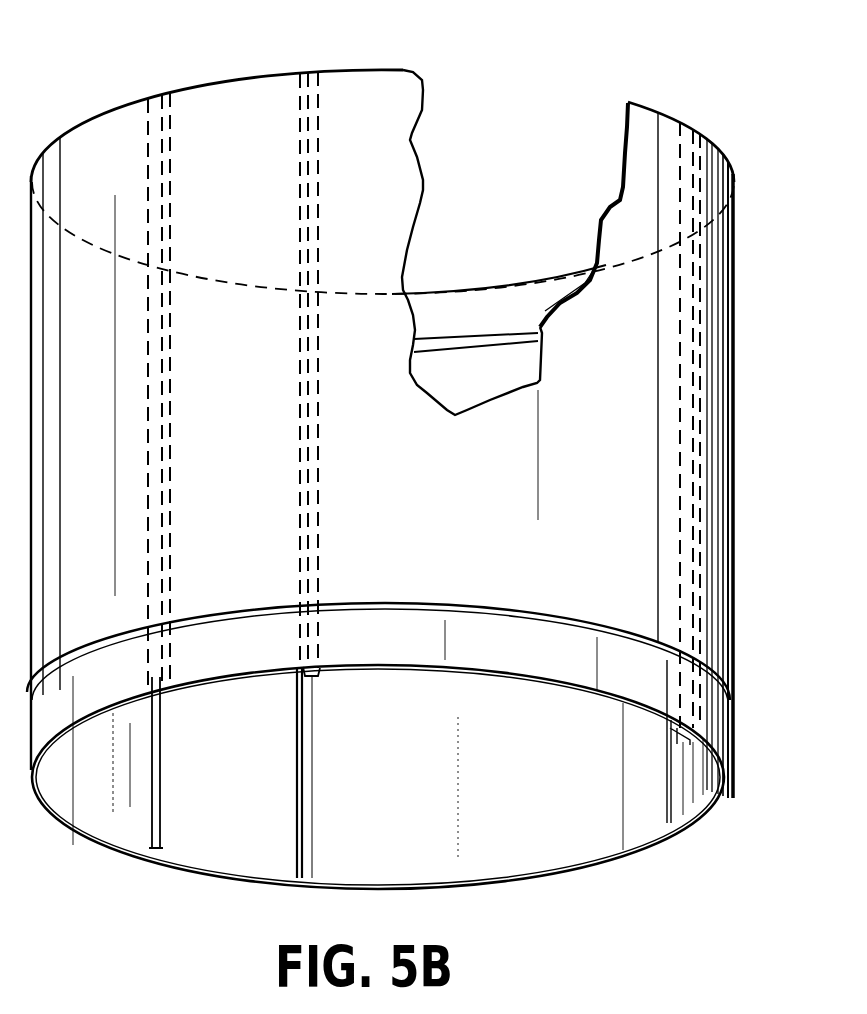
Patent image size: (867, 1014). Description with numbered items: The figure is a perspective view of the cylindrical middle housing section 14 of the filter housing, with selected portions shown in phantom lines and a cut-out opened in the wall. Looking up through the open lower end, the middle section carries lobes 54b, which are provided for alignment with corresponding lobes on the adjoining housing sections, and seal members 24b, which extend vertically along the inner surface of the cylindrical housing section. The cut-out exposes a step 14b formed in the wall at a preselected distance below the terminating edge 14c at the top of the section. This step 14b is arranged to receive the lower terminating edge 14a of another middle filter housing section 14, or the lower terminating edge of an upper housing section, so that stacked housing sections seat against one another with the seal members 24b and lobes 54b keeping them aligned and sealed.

The middle housing section 14 is at (750, 275).
The lower terminating edge 14a is at (540, 680).
The step 14b is at (486, 340).
The terminating edge 14c is at (402, 70).
The seal members 24b is at (314, 672).
The lobes 54b is at (163, 774).